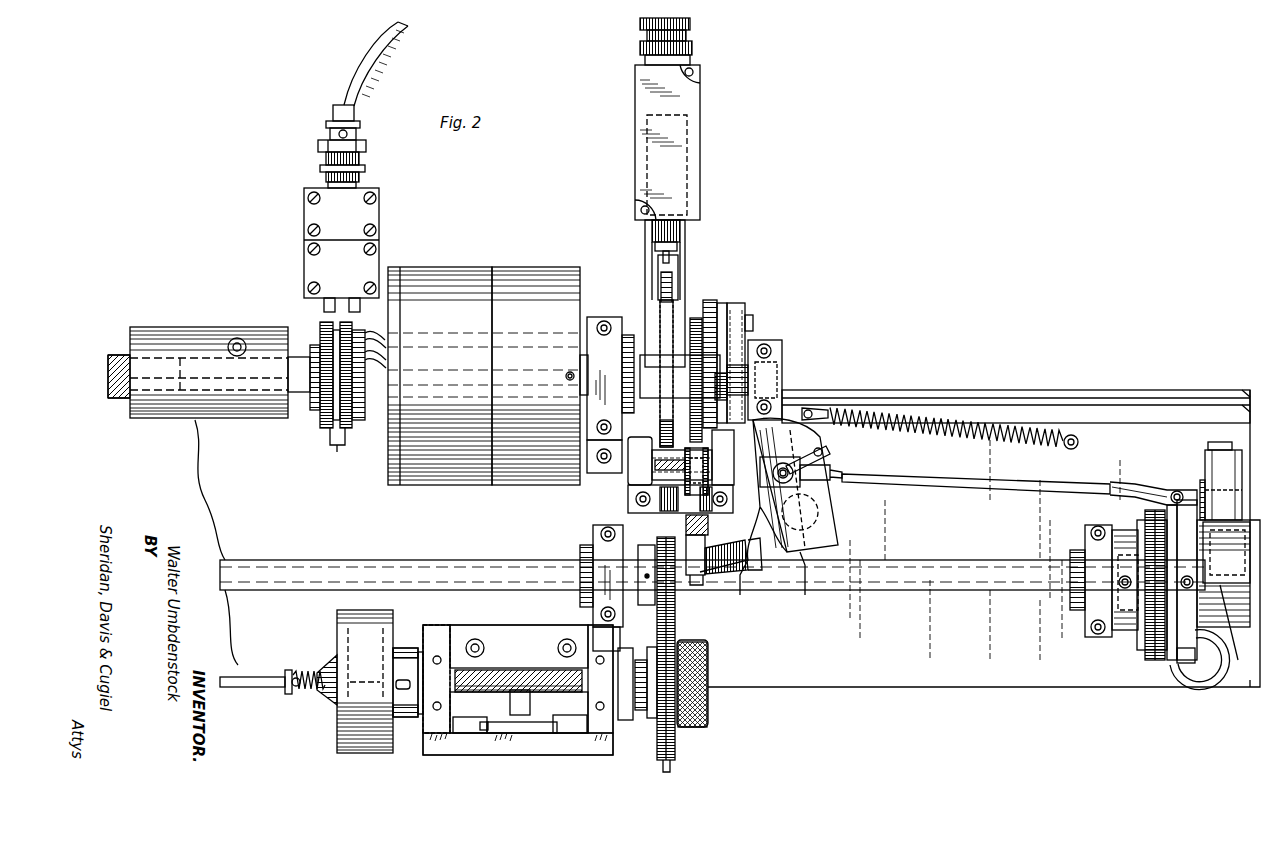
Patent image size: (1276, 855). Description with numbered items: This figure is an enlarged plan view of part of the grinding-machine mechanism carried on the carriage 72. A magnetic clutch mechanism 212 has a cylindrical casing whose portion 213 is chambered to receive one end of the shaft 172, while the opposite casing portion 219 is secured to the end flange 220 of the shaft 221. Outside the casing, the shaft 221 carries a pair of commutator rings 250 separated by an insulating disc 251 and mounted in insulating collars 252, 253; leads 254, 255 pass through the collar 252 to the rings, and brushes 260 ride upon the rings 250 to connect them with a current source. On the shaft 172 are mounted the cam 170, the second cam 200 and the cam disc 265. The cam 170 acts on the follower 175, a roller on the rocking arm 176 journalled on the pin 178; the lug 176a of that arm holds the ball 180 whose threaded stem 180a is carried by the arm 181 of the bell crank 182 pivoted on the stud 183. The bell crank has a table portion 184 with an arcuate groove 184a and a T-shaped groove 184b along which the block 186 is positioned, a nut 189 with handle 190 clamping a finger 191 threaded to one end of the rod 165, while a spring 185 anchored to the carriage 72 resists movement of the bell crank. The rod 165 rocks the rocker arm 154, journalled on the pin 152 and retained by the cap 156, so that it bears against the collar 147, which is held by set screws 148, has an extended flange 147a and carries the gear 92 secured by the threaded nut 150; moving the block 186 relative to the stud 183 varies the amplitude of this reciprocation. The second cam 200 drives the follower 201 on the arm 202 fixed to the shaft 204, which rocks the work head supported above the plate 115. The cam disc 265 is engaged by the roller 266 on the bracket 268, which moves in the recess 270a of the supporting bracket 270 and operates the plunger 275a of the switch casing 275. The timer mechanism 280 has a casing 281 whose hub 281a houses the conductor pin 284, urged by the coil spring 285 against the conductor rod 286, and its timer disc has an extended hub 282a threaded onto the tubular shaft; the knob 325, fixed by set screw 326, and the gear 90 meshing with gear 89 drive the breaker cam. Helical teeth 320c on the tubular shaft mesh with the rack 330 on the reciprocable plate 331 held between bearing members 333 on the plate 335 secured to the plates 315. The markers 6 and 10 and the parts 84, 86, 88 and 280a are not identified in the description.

The section line 6 is at (858, 540).
The section line 10 is at (180, 440).
The carriage 72 is at (957, 686).
The shaft 84 is at (970, 592).
The bearing block 86 is at (1097, 636).
The bearing block 88 is at (592, 532).
The gear 89 is at (648, 605).
The gear 90 is at (666, 772).
The gear 92 is at (1155, 665).
The supporting plate 115 is at (1248, 690).
The collar 147 is at (1182, 664).
The extended flange 147a is at (1222, 685).
The set screws 148 is at (1190, 578).
The threaded nut 150 is at (1142, 648).
The pin 152 is at (1238, 631).
The rocker arm 154 is at (1205, 471).
The cap 156 is at (1208, 448).
The rod 165 is at (995, 487).
The cam 170 is at (697, 318).
The shaft 172 is at (745, 365).
The follower 175 is at (660, 465).
The rocking arm 176 is at (672, 505).
The projecting lug 176a is at (695, 510).
The pin 178 is at (685, 455).
The ball 180 is at (688, 585).
The screw threaded stem 180a is at (715, 580).
The arm 181 is at (748, 572).
The bell crank 182 is at (810, 495).
The stud 183 is at (815, 515).
The table portion 184 is at (818, 470).
The arcuate groove 184a is at (748, 572).
The T-shaped groove 184b is at (812, 552).
The spring 185 is at (905, 412).
The block 186 is at (830, 412).
The nut 189 is at (812, 492).
The handle 190 is at (815, 438).
The finger 191 is at (848, 470).
The second cam 200 is at (740, 320).
The follower 201 is at (715, 300).
The arm 202 is at (728, 330).
The shaft 204 is at (1130, 410).
The magnetic clutch mechanism 212 is at (488, 354).
The casing portion 213 is at (540, 268).
The casing portion 219 is at (445, 268).
The end flange 220 is at (394, 266).
The shaft 221 is at (118, 355).
The commutator rings 250 is at (350, 406).
The insulating disc 251 is at (325, 385).
The insulating collar 252 is at (365, 430).
The insulating collar 253 is at (336, 428).
The lead 254 is at (386, 362).
The lead 255 is at (386, 342).
The brushes 260 is at (322, 302).
The cam disc 265 is at (660, 318).
The roller 266 is at (661, 288).
The bracket 268 is at (678, 270).
The supporting bracket 270 is at (655, 248).
The recess 270a is at (662, 257).
The switch casing 275 is at (700, 127).
The plunger 275a is at (685, 238).
The timer mechanism 280 is at (326, 700).
The collar 280a is at (294, 677).
The casing 281 is at (337, 735).
The hub portion 281a is at (330, 690).
The extended hub 282a is at (402, 648).
The conductor pin 284 is at (310, 675).
The coil spring 285 is at (290, 694).
The conductor rod 286 is at (236, 676).
The spaced plates 315 is at (428, 638).
The helical teeth 320c is at (498, 672).
The knob 325 is at (706, 725).
The set screw 326 is at (709, 668).
The rack 330 is at (530, 708).
The vertically reciprocable plate 331 is at (540, 728).
The bearing members 333 is at (472, 722).
The plate 335 is at (608, 757).